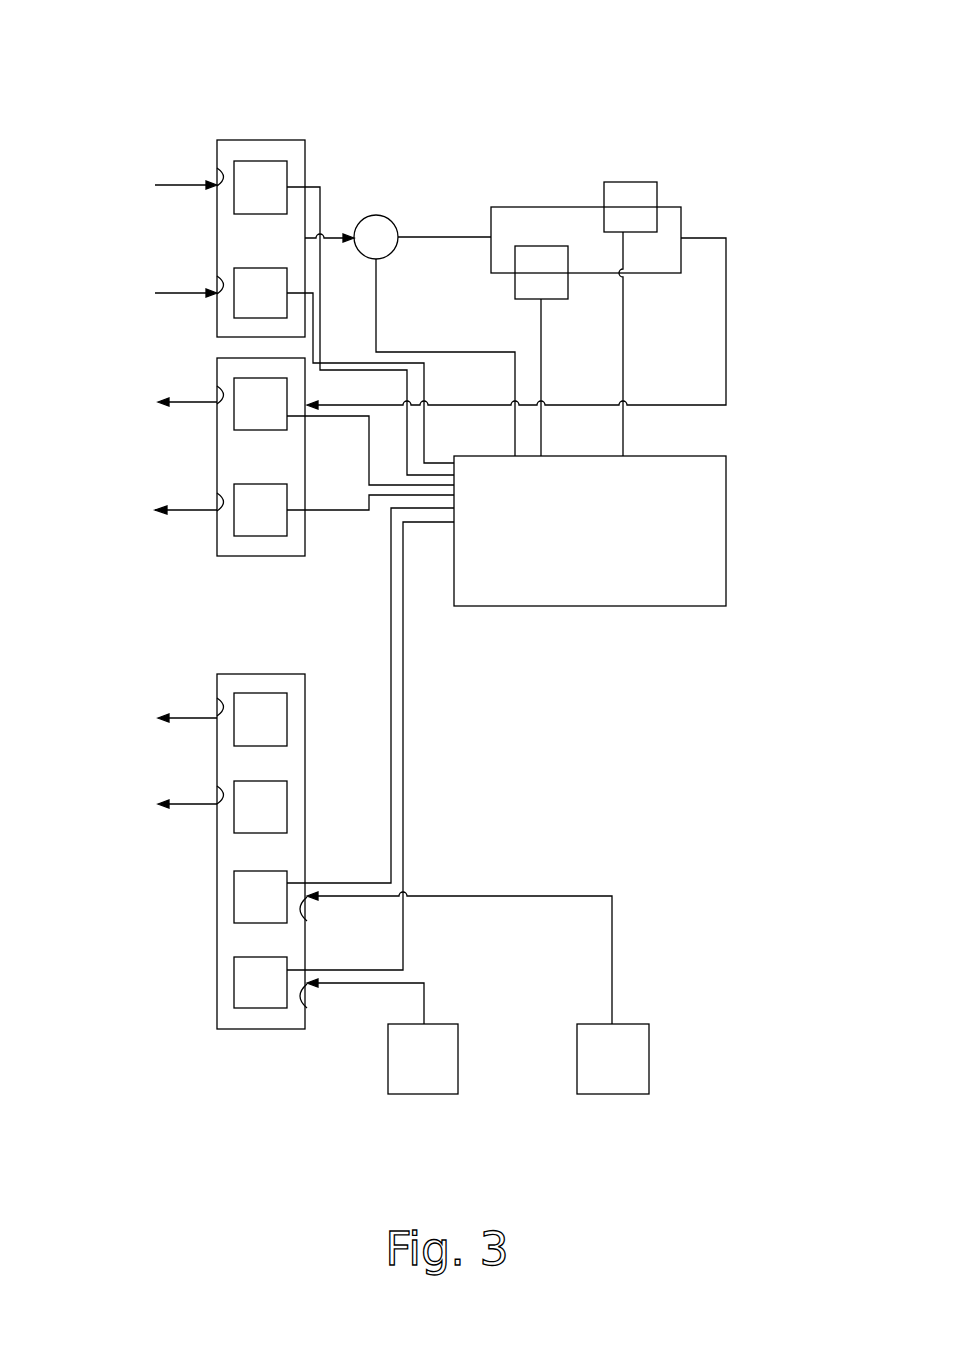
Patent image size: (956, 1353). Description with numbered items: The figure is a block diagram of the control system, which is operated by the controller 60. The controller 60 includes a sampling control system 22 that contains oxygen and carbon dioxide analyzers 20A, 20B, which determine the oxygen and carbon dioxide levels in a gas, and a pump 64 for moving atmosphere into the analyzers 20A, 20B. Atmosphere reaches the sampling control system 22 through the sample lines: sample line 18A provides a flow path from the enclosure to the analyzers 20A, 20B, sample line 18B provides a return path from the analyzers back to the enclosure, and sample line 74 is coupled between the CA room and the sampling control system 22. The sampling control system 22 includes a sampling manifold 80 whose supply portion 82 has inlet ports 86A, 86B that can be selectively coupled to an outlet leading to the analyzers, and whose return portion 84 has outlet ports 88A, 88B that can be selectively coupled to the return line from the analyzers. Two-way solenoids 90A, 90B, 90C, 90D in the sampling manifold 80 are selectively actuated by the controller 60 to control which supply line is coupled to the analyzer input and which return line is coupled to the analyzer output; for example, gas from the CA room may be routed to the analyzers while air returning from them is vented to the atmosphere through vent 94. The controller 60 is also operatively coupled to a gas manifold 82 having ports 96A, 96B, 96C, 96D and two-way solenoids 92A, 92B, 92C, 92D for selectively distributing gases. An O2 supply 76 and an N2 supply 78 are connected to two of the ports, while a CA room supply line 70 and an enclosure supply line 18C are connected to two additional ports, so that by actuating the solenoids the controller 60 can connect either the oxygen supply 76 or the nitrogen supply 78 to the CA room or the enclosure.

The controller 60 is at (571, 100).
The sampling manifold 80 is at (242, 118).
The supply portion / gas manifold 82 is at (305, 158).
The return portion 84 is at (245, 556).
The two-way solenoid 90A is at (263, 168).
The two-way solenoid 90B is at (245, 306).
The two-way solenoid 90C is at (258, 424).
The two-way solenoid 90D is at (245, 528).
The two-way solenoid 92A is at (258, 708).
The two-way solenoid 92B is at (245, 818).
The two-way solenoid 92C is at (240, 903).
The two-way solenoid 92D is at (245, 994).
The inlet port 86A is at (222, 172).
The inlet port 86B is at (222, 280).
The outlet port 88A is at (222, 390).
The outlet port 88B is at (222, 498).
The port 96A is at (222, 702).
The port 96B is at (222, 790).
The port 96C is at (307, 921).
The port 96D is at (307, 1008).
The sample line 74 is at (168, 184).
The sample line 18A is at (168, 292).
The sample line 18B is at (177, 401).
The enclosure supply line 18C is at (177, 803).
The CA room supply line 70 is at (177, 717).
The vent 94 is at (153, 510).
The pump 64 is at (371, 215).
The sampling control system 22 is at (424, 186).
The oxygen analyzer 20A is at (632, 182).
The carbon dioxide analyzer 20B is at (532, 250).
The O2 supply 76 is at (412, 1094).
The N2 supply 78 is at (612, 1094).